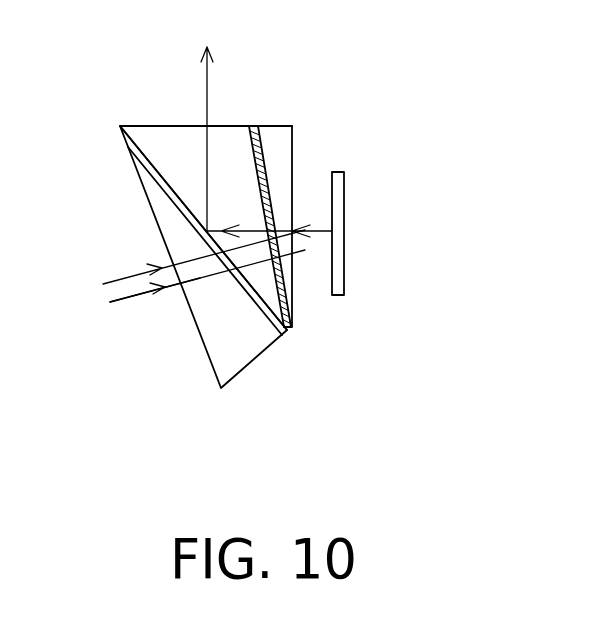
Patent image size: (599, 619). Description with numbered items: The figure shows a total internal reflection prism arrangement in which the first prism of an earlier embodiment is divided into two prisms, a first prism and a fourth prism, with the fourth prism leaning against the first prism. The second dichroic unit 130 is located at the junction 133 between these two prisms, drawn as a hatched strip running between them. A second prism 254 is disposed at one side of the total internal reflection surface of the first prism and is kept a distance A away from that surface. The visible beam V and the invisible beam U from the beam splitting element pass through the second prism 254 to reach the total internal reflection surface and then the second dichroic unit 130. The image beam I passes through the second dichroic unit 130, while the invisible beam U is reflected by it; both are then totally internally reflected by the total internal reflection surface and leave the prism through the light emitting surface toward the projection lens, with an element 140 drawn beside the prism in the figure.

The second prism 254 is at (145, 182).
The distance A is at (127, 140).
The second dichroic unit 130 is at (259, 150).
The junction 133 is at (288, 333).
The screen 140 is at (344, 203).
The image beam I is at (327, 229).
The invisible beam U is at (118, 277).
The visible beam V is at (120, 302).